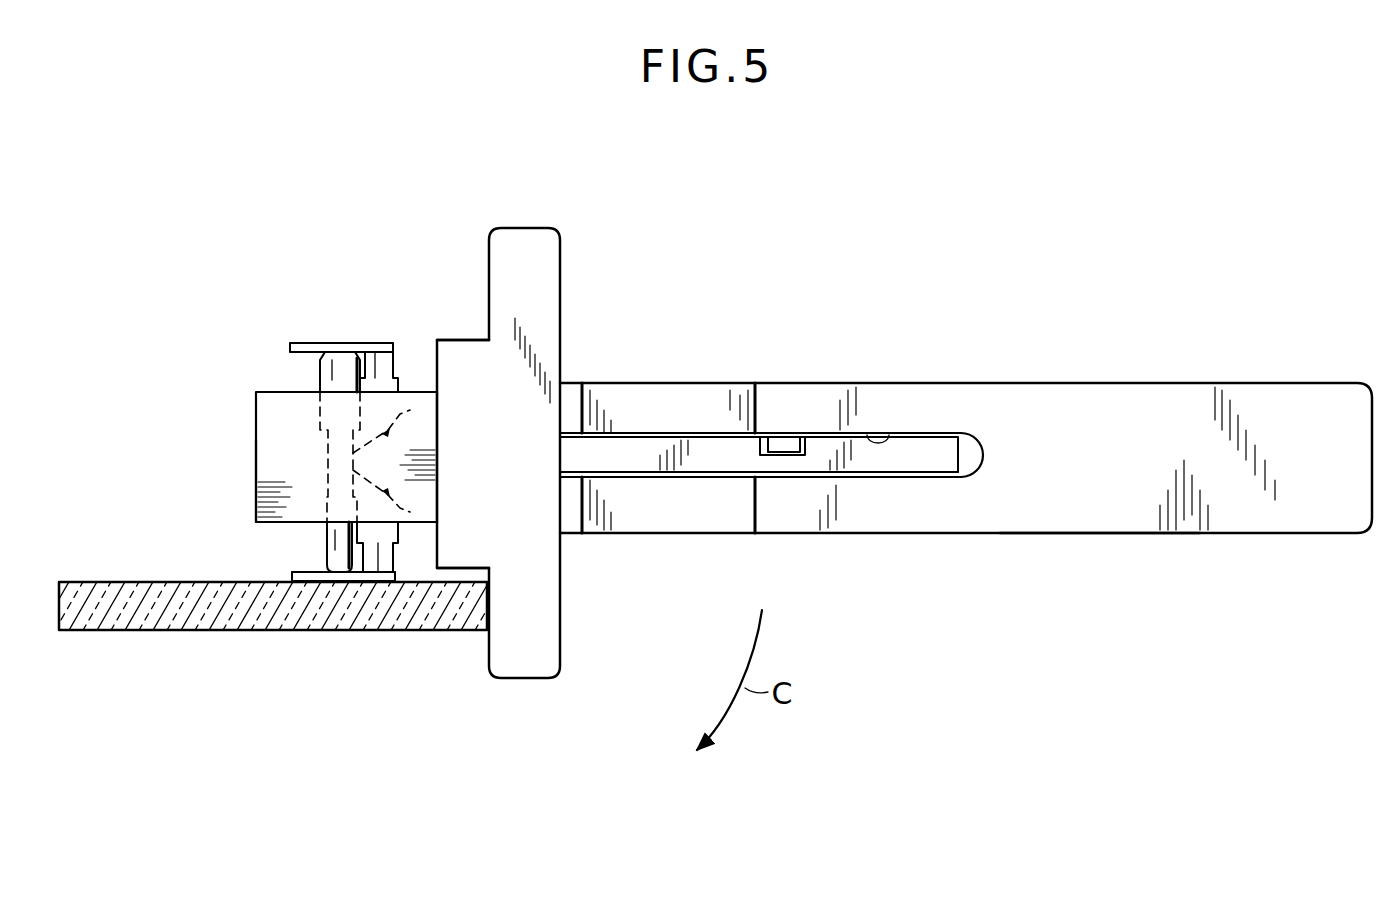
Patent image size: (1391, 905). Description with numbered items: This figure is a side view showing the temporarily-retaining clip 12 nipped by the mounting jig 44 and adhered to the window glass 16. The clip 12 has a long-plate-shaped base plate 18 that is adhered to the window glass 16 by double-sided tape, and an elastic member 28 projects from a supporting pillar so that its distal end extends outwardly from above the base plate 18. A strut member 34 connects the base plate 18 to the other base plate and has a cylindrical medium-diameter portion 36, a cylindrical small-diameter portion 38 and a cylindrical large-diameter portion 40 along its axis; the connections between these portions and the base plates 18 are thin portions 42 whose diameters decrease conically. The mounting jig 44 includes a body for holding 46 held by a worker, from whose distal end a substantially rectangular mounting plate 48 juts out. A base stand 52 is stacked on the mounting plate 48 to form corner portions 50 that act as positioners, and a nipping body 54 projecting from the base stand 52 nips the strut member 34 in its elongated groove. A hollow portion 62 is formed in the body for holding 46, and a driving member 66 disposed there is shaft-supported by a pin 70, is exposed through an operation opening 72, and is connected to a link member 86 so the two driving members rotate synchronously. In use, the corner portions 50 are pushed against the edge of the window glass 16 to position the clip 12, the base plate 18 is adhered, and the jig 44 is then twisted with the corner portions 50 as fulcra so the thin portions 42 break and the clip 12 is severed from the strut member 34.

The temporarily-retaining clip 12 is at (290, 338).
The window glass 16 is at (187, 623).
The base plate 18 is at (309, 344).
The elastic member 28 is at (357, 455).
The strut member 34 is at (298, 410).
The medium-diameter portion 36 is at (322, 547).
The small-diameter portion 38 is at (327, 456).
The large-diameter portion 40 is at (318, 372).
The thin portion 42 is at (359, 347).
The mounting jig 44 is at (1104, 363).
The body for holding 46 is at (1120, 534).
The mounting plate 48 is at (562, 258).
The corner portion 50 is at (482, 339).
The base stand 52 is at (426, 355).
The nipping body 54 is at (262, 478).
The hollow portion 62 is at (890, 433).
The driving member 66 is at (892, 458).
The pin 70 is at (933, 433).
The operation opening 72 is at (752, 403).
The link member 86 is at (785, 438).